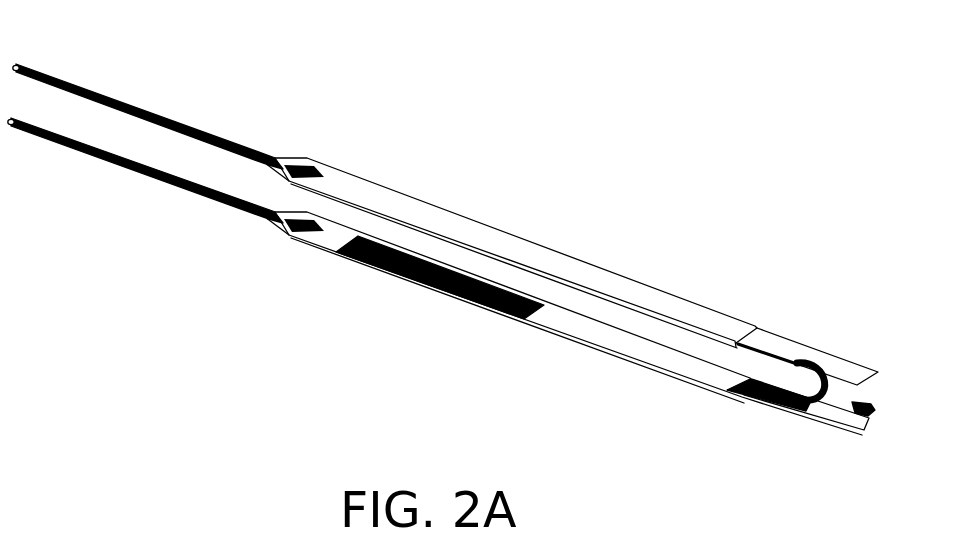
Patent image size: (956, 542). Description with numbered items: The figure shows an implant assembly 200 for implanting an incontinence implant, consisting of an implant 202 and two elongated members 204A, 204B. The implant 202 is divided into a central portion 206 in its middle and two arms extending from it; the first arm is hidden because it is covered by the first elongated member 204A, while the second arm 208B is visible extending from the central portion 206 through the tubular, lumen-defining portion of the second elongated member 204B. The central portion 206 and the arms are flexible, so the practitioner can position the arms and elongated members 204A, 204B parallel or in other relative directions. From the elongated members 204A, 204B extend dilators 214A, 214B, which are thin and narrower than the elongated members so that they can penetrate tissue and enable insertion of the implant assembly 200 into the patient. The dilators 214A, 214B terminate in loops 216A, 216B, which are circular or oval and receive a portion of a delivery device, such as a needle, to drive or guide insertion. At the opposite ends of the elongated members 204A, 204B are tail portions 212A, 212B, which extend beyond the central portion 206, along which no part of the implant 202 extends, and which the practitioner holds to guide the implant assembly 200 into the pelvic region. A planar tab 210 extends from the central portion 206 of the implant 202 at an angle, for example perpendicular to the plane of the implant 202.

The implant assembly 200 is at (447, 115).
The implant 202 is at (755, 427).
The first elongated member 204A is at (546, 255).
The second elongated member 204B is at (328, 241).
The central portion 206 is at (802, 380).
The second arm 208B is at (487, 303).
The tab 210 is at (862, 428).
The first tail portion 212A is at (818, 362).
The second tail portion 212B is at (820, 418).
The first dilator 214A is at (200, 127).
The second dilator 214B is at (185, 190).
The first loop 216A is at (18, 63).
The second loop 216B is at (13, 125).